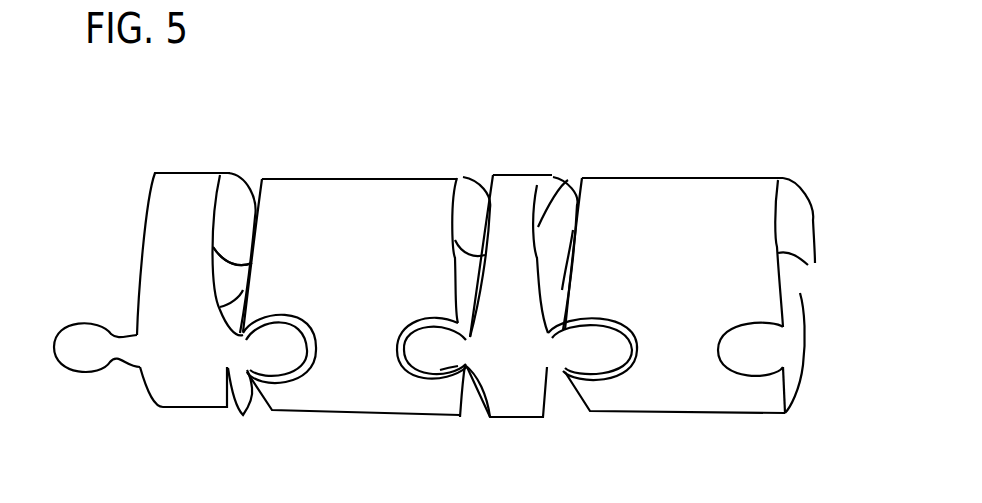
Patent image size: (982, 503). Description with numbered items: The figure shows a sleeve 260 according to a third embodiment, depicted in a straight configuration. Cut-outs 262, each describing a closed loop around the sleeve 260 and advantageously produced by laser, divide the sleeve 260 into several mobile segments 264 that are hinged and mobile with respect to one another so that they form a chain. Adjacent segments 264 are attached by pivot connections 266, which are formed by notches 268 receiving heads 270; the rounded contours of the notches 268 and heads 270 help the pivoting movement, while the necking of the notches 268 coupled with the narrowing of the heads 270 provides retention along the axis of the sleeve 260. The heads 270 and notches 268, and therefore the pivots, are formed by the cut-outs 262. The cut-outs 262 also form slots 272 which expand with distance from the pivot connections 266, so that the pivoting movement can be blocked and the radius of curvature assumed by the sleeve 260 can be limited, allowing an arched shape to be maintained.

The sleeve 260 is at (645, 158).
The cut-outs 262 is at (573, 230).
The mobile segments 264 is at (285, 197).
The pivot connections 266 is at (403, 315).
The notches 268 is at (596, 318).
The heads 270 is at (84, 340).
The slots 272 is at (485, 185).